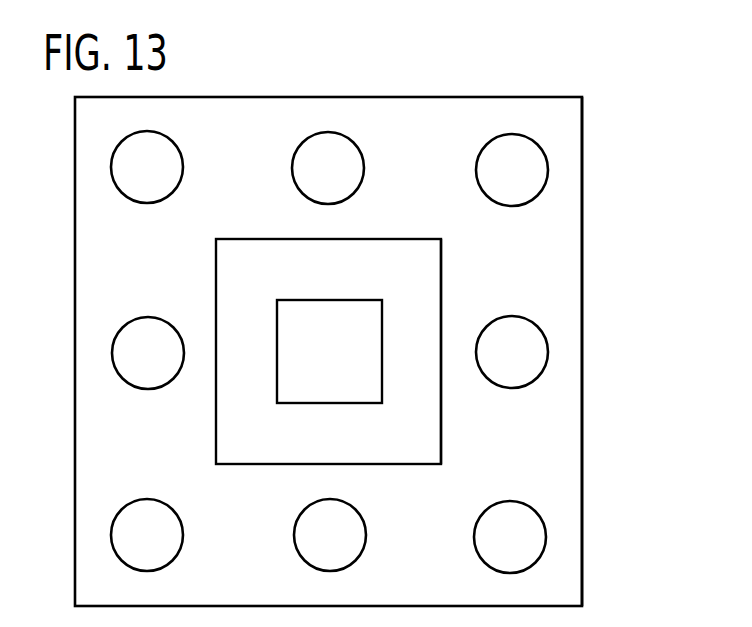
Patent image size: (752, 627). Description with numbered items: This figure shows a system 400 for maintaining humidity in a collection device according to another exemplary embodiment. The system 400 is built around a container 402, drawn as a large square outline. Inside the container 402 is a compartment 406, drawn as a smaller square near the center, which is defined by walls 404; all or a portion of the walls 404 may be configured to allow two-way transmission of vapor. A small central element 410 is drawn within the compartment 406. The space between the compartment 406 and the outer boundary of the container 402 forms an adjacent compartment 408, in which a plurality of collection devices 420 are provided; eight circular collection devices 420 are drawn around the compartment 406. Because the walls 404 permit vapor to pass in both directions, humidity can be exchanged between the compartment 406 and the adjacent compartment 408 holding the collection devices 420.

The system for maintaining humidity 400 is at (538, 91).
The container 402 is at (418, 95).
The walls 404 is at (443, 290).
The compartment 406 is at (267, 260).
The adjacent compartment 408 is at (573, 403).
The central element 410 is at (327, 298).
The collection devices 420 is at (183, 165).